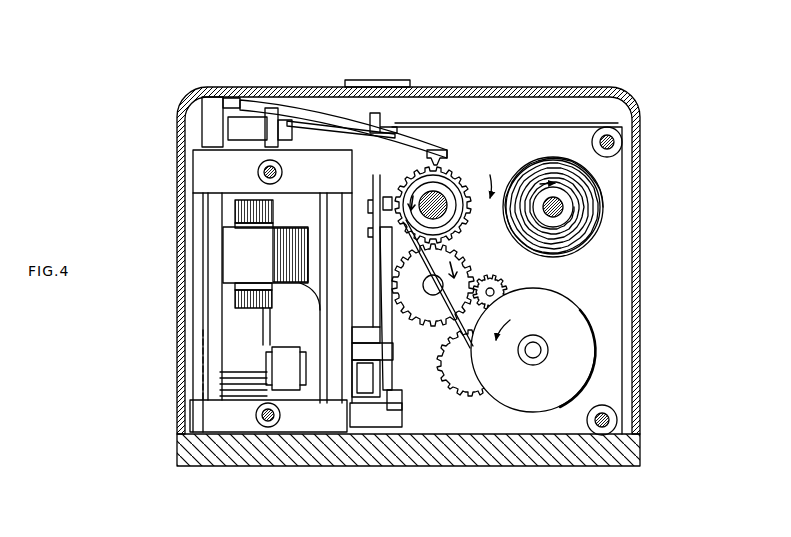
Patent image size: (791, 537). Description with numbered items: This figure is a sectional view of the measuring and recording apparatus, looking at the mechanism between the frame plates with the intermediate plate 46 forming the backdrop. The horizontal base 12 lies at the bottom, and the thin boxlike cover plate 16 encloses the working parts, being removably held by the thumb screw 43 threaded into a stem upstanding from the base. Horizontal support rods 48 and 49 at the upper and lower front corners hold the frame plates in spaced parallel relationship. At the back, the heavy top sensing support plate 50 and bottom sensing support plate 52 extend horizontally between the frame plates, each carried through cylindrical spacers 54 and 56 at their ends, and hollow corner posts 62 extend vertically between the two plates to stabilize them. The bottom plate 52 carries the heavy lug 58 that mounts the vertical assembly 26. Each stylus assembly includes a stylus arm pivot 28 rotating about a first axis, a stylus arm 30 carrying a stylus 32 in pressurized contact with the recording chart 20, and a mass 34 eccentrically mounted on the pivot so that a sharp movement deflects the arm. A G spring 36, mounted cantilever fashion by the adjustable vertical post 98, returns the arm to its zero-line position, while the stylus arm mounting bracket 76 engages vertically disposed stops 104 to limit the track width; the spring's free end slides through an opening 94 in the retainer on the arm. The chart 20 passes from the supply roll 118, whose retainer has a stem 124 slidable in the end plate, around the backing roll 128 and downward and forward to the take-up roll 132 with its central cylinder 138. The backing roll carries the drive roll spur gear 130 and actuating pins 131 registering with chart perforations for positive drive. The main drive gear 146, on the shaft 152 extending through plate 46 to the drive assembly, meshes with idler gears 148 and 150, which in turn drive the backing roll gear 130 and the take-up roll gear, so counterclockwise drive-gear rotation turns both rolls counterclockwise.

The base 12 is at (463, 452).
The cover plate 16 is at (485, 89).
The recording chart 20 is at (503, 180).
The vertical assembly 26 is at (407, 420).
The stylus arm pivot 28 is at (210, 196).
The stylus arm 30 is at (413, 136).
The stylus 32 is at (424, 157).
The mass 34 is at (225, 243).
The G spring 36 is at (312, 108).
The thumb screw 43 is at (372, 79).
The intermediate plate 46 is at (602, 281).
The horizontal support rod 48 is at (622, 138).
The horizontal support rod 49 is at (617, 415).
The top sensing support plate 50 is at (195, 155).
The bottom sensing support plate 52 is at (193, 408).
The cylindrical spacer 54 is at (284, 172).
The cylindrical spacer 56 is at (268, 428).
The heavy lug 58 is at (287, 281).
The corner post 62 is at (198, 285).
The stylus arm mounting bracket 76 is at (248, 118).
The link 94 is at (345, 134).
The adjustable vertical post 98 is at (208, 96).
The stop 104 is at (276, 112).
The supply roll 118 is at (574, 205).
The stem 124 is at (598, 193).
The backing roll 128 is at (445, 160).
The drive roll spur gear 130 is at (497, 177).
The actuating pins 131 is at (453, 172).
The take-up roll 132 is at (600, 355).
The central cylinder 138 is at (535, 335).
The main drive gear 146 is at (482, 287).
The idler gear 148 is at (458, 256).
The idler gear 150 is at (472, 387).
The shaft 152 is at (498, 291).